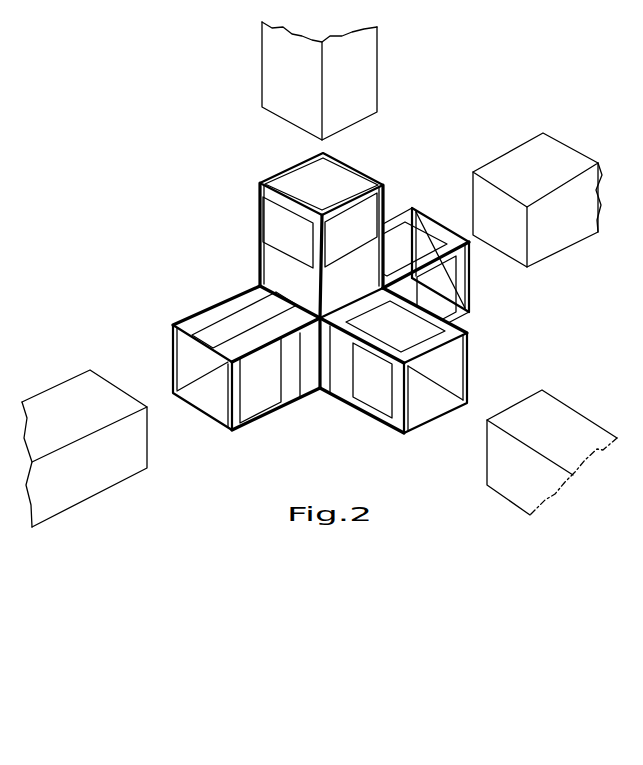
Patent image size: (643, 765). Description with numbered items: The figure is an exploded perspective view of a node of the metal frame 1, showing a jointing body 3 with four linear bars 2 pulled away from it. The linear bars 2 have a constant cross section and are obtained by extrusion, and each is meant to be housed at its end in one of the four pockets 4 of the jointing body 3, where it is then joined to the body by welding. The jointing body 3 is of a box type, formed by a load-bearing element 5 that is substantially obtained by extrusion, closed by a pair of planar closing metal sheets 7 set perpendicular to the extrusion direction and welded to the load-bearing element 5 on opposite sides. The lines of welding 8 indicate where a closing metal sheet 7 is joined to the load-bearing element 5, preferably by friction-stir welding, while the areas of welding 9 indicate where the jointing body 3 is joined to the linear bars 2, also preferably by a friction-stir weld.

The metal frame 1 is at (321, 398).
The linear bar 2 is at (370, 86).
The jointing body 3 is at (311, 425).
The pocket 4 is at (300, 183).
The load-bearing element 5 is at (340, 389).
The planar closing metal sheet 7 is at (297, 372).
The line of welding 8 is at (317, 315).
The area of welding 9 is at (273, 222).